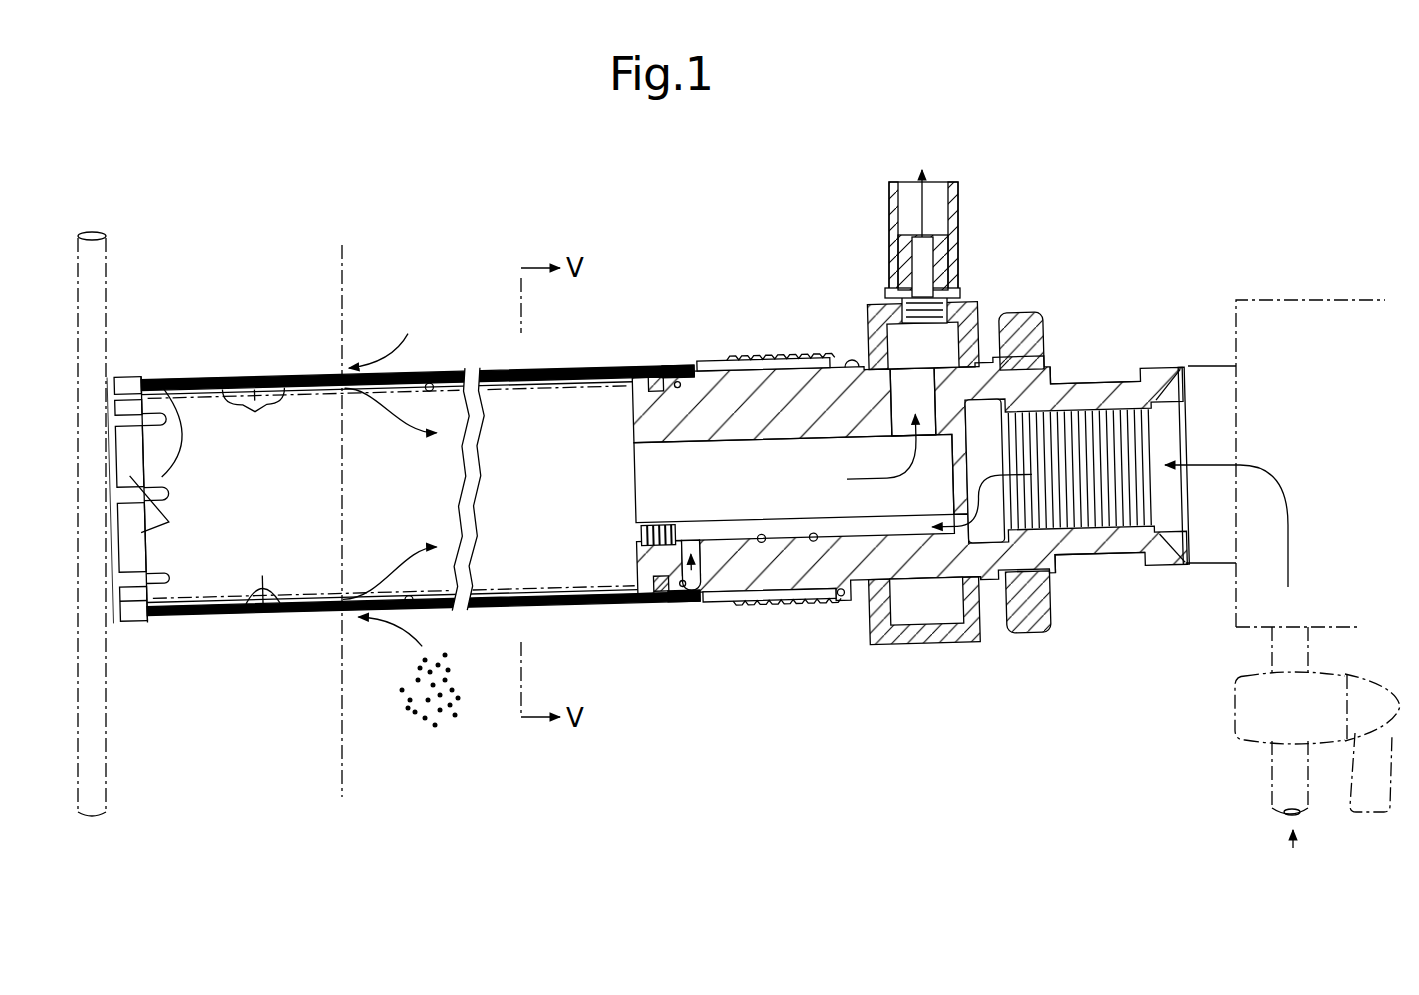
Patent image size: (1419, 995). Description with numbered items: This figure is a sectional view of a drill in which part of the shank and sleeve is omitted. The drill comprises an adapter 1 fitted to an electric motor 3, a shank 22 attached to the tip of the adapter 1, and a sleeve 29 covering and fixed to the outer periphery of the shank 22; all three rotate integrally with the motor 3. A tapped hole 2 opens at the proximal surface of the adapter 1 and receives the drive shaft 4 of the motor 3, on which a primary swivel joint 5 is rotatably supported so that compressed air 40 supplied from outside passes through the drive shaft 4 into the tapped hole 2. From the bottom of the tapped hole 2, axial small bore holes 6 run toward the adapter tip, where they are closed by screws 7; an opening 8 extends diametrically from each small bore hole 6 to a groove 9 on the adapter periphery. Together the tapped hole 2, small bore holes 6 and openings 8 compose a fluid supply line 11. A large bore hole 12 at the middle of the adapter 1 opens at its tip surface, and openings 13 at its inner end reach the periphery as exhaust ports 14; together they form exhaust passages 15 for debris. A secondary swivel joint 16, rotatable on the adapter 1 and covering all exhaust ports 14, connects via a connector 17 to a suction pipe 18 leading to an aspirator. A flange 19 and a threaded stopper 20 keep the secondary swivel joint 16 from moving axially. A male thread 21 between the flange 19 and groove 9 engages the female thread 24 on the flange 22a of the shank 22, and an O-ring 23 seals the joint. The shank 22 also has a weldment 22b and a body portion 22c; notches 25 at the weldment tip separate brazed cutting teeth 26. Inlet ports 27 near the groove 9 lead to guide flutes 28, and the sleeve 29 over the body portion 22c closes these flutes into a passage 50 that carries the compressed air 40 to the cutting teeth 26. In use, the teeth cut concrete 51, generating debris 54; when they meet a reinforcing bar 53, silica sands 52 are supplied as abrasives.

The adapter 1 is at (1094, 382).
The tapped hole 2 is at (1186, 425).
The electric motor 3 is at (1264, 294).
The drive shaft 4 is at (1085, 540).
The primary swivel joint 5 is at (1237, 602).
The small bore holes 6 is at (762, 544).
The screws 7 is at (640, 543).
The opening 8 is at (700, 565).
The groove 9 is at (667, 387).
The fluid supply line 11 is at (811, 600).
The large bore hole 12 is at (633, 446).
The openings 13 is at (937, 427).
The exhaust ports 14 is at (928, 370).
The exhaust passages 15 is at (683, 503).
The secondary swivel joint 16 is at (970, 650).
The connector 17 is at (958, 258).
The suction pipe 18 is at (958, 196).
The flange 19 is at (857, 348).
The stopper 20 is at (1046, 330).
The male thread 21 is at (771, 350).
The shank 22 is at (712, 352).
The flange 22a is at (775, 604).
The weldment 22b is at (144, 622).
The body portion 22c is at (470, 605).
The O-ring 23 is at (648, 385).
The female thread 24 is at (838, 602).
The notches 25 is at (157, 607).
The cutting teeth 26 is at (145, 527).
The inlet ports 27 is at (690, 362).
The guide flutes 28 is at (485, 368).
The sleeve 29 is at (548, 366).
The compressed air 40 is at (1290, 807).
The passage 50 is at (437, 377).
The concrete 51 is at (347, 763).
The silica sands 52 is at (437, 718).
The reinforcing bar 53 is at (108, 782).
The debris 54 is at (256, 497).